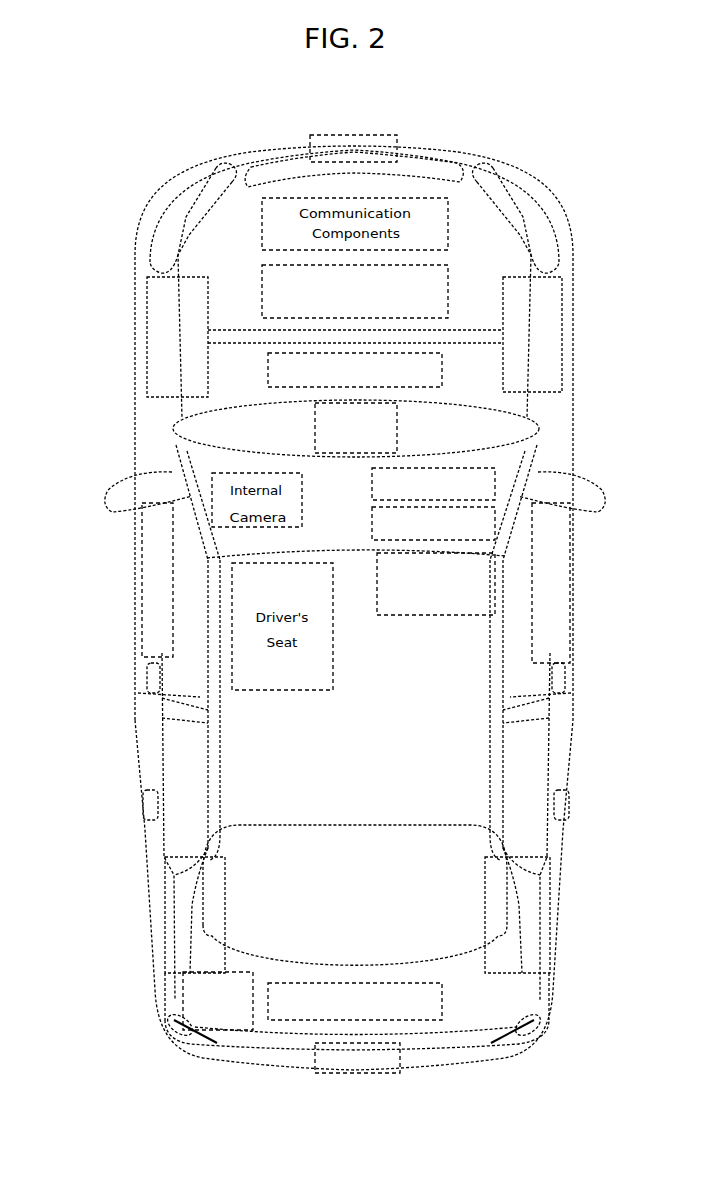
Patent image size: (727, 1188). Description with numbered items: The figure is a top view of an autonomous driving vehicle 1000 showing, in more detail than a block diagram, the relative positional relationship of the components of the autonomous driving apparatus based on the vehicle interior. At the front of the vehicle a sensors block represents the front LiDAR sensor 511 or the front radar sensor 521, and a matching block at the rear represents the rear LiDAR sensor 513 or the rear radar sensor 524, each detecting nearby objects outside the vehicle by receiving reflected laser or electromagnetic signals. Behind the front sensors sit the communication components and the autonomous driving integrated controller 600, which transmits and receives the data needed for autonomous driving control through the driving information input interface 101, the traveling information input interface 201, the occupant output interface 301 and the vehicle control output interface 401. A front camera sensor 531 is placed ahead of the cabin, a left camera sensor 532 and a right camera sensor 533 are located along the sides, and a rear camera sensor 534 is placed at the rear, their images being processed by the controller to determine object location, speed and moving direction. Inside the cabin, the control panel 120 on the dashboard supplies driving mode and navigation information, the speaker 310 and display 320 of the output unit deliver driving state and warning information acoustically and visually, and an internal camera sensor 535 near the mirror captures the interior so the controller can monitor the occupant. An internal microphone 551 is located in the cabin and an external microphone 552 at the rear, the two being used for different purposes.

The autonomous driving vehicle 1000 is at (85, 80).
The driving information input interface 101 is at (335, 590).
The traveling information input interface 201 is at (335, 590).
The occupant output interface 301 is at (335, 590).
The vehicle control output interface 401 is at (448, 237).
The front LiDAR sensor 511 is at (353, 127).
The front radar sensor 521 is at (355, 135).
The rear LiDAR sensor 513 is at (357, 1080).
The rear radar sensor 524 is at (356, 1075).
The autonomous driving integrated controller 600 is at (448, 292).
The front camera sensor 531 is at (442, 372).
The control panel 120 is at (397, 430).
The internal camera sensor 535 is at (168, 480).
The speaker 310 is at (372, 488).
The display 320 is at (372, 528).
The left camera sensor 532 is at (142, 585).
The right camera sensor 533 is at (570, 585).
The internal microphone 551 is at (437, 616).
The external microphone 552 is at (182, 1004).
The rear camera sensor 534 is at (442, 1004).